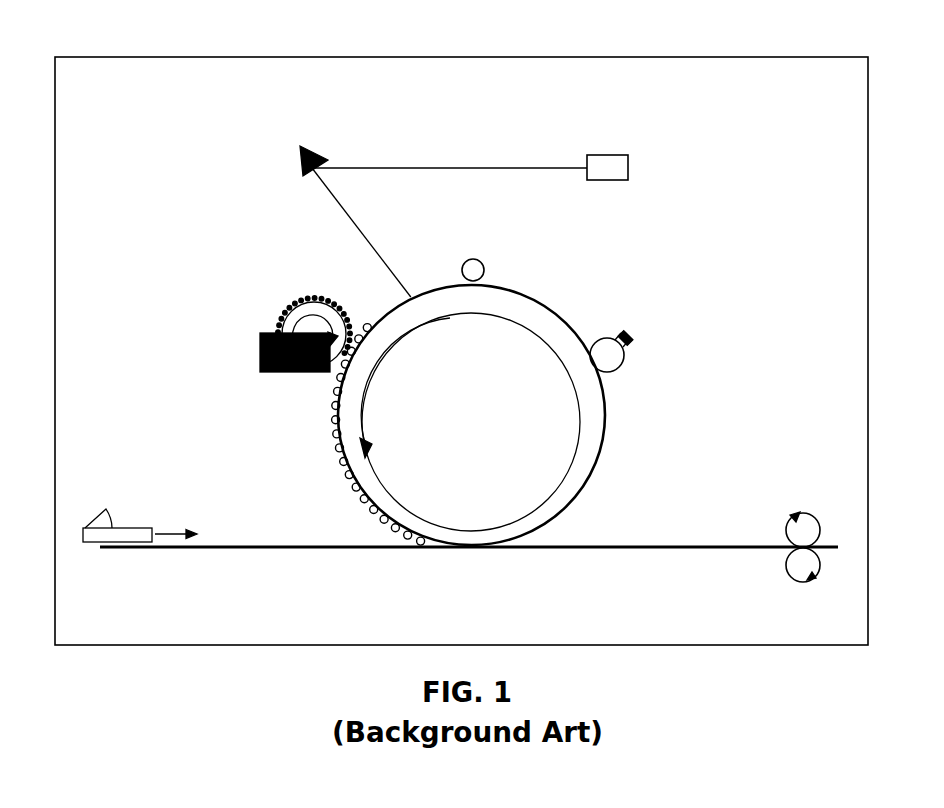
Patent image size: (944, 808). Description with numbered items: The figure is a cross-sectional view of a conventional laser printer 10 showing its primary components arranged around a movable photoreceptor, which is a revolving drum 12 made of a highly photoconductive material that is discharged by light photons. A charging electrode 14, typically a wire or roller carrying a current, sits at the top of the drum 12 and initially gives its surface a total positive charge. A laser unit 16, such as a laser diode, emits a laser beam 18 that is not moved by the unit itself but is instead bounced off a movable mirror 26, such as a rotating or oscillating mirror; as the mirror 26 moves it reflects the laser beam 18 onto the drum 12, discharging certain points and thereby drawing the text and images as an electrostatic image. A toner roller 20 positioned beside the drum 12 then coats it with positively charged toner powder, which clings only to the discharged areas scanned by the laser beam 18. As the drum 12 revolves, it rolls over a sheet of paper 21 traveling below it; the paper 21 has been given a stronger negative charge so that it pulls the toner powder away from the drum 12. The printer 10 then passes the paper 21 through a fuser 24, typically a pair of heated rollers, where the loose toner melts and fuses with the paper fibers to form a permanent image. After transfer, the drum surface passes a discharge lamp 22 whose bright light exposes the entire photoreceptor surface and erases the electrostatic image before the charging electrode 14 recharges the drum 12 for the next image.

The laser printer 10 is at (363, 57).
The photoreceptor drum 12 is at (522, 510).
The charging electrode 14 is at (475, 259).
The laser unit 16 is at (605, 155).
The laser beam 18 is at (470, 168).
The toner roller 20 is at (290, 303).
The sheet of paper 21 is at (110, 520).
The discharge lamp 22 is at (618, 368).
The fuser 24 is at (798, 534).
The movable mirror 26 is at (281, 148).